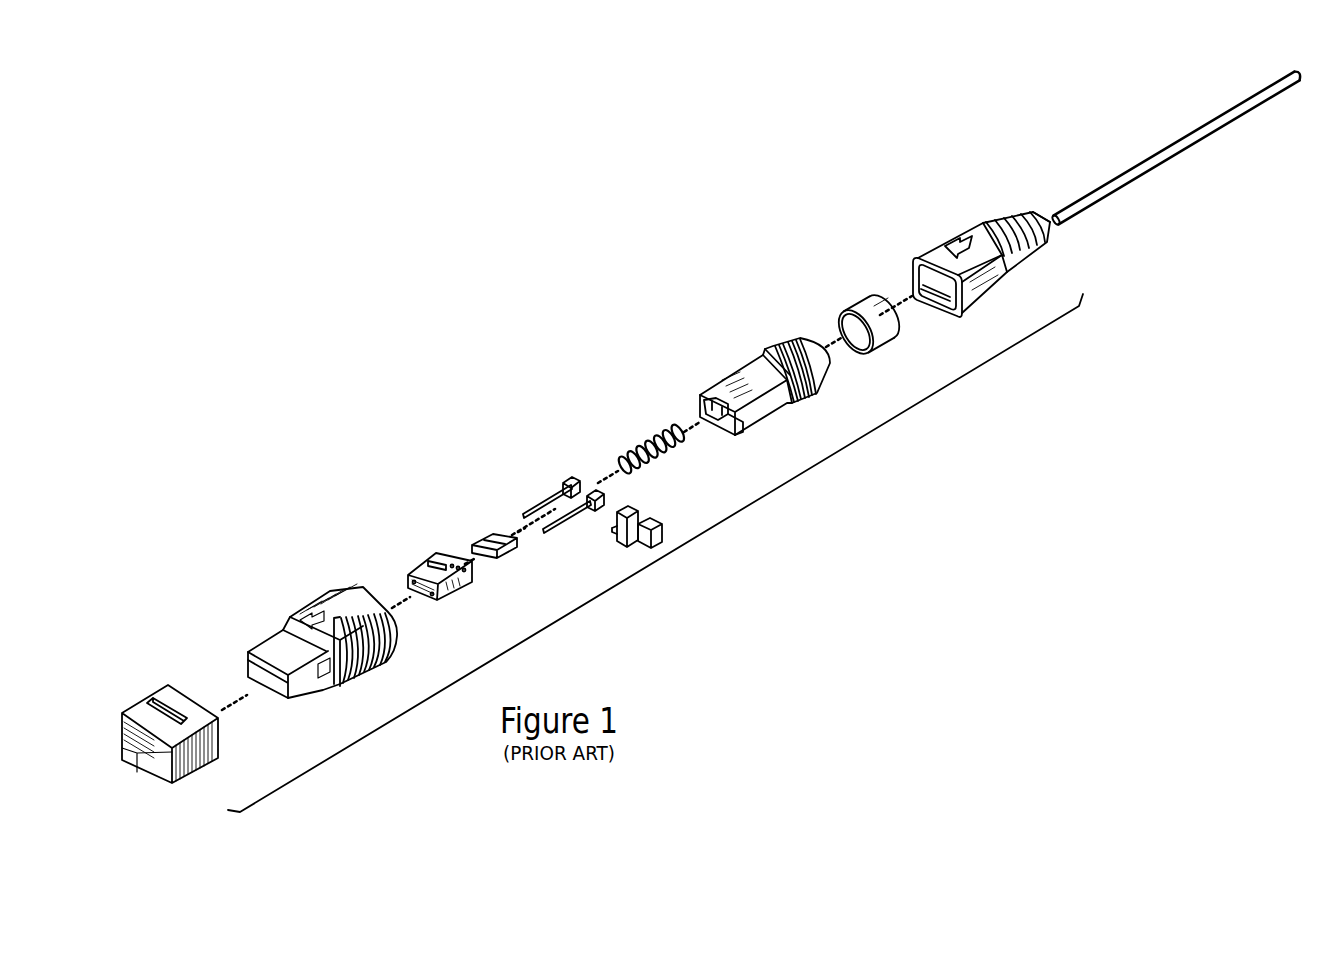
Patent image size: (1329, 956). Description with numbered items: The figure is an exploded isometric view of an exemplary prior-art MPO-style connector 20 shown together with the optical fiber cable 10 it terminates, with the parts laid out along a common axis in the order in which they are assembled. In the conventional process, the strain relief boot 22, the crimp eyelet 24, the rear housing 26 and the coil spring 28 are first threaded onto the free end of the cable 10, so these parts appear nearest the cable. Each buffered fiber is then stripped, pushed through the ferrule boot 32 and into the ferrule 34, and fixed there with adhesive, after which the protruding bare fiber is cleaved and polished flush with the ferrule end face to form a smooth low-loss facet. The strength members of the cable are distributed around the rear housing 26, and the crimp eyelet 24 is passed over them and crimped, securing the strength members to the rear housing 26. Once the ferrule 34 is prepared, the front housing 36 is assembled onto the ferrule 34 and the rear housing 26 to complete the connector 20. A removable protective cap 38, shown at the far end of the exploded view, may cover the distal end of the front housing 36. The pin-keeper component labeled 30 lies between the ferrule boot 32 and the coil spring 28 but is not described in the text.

The optical fiber cable 10 is at (1163, 155).
The connector 20 is at (712, 531).
The strain relief boot 22 is at (963, 232).
The crimp eyelet 24 is at (865, 304).
The rear housing 26 is at (745, 374).
The coil spring 28 is at (645, 438).
The pin keeper with guide pins 30 is at (569, 476).
The ferrule boot 32 is at (500, 532).
The ferrule 34 is at (425, 567).
The front housing 36 is at (326, 604).
The removable protective cap 38 is at (168, 697).